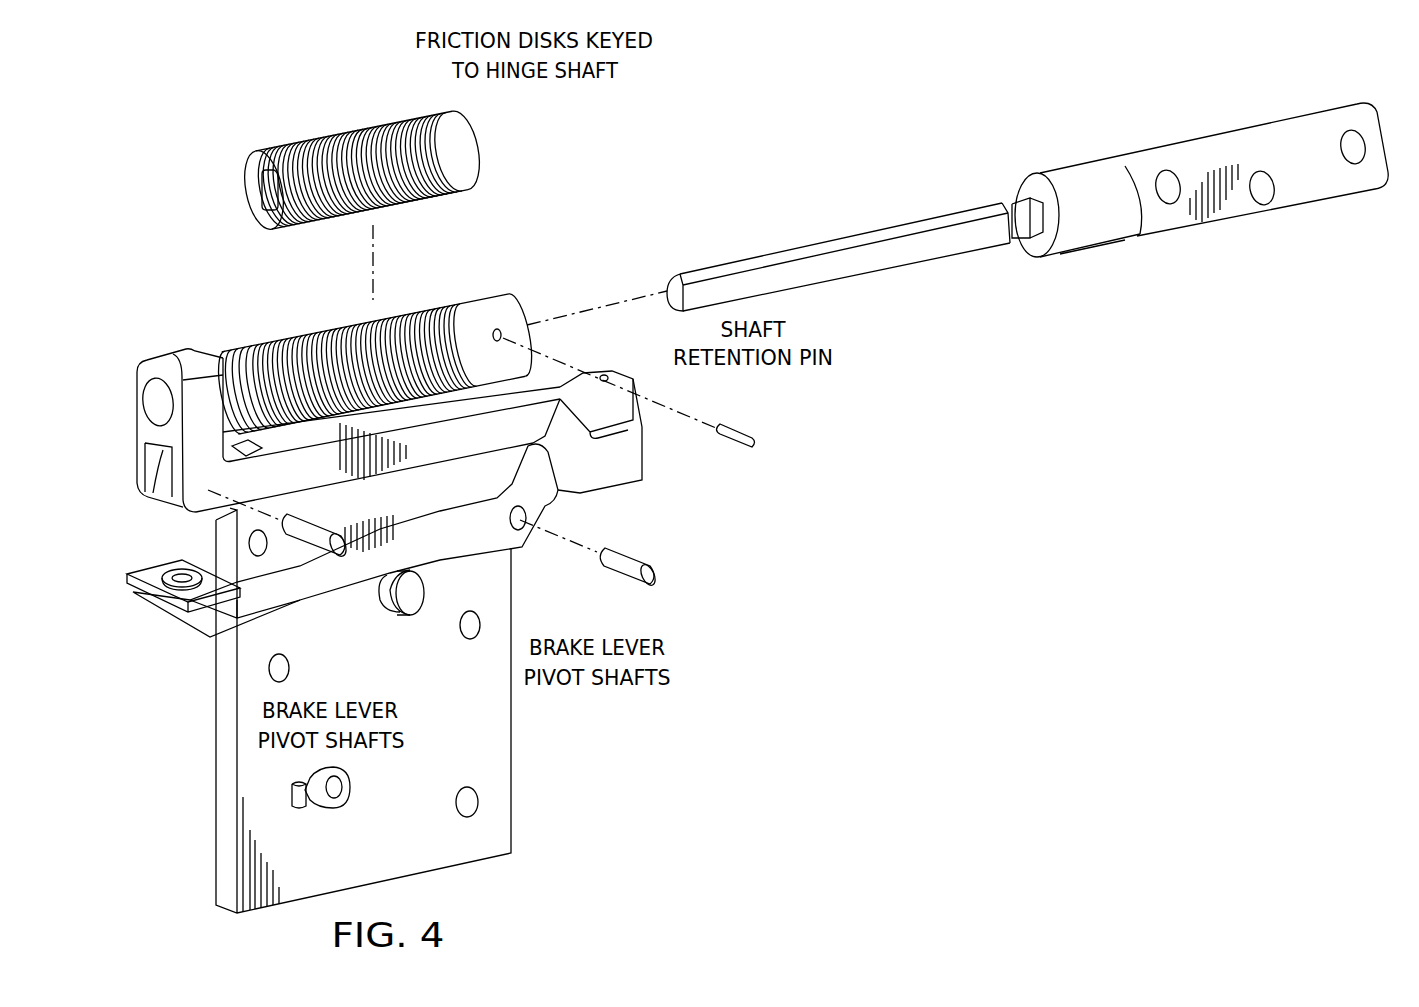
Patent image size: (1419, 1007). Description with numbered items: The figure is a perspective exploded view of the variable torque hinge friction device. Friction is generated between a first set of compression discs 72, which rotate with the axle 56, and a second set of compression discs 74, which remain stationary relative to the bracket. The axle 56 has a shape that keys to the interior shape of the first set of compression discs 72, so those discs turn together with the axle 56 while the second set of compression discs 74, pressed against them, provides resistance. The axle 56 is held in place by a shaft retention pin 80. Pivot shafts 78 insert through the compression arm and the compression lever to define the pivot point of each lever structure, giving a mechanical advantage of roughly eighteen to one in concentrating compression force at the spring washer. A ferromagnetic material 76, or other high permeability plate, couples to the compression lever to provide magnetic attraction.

The axle 56 is at (1192, 140).
The first set of compression discs 72 is at (480, 132).
The second set of compression discs 74 is at (290, 336).
The ferromagnetic material 76 is at (152, 575).
The pivot shafts 78 is at (300, 565).
The shaft retention pin 80 is at (741, 426).